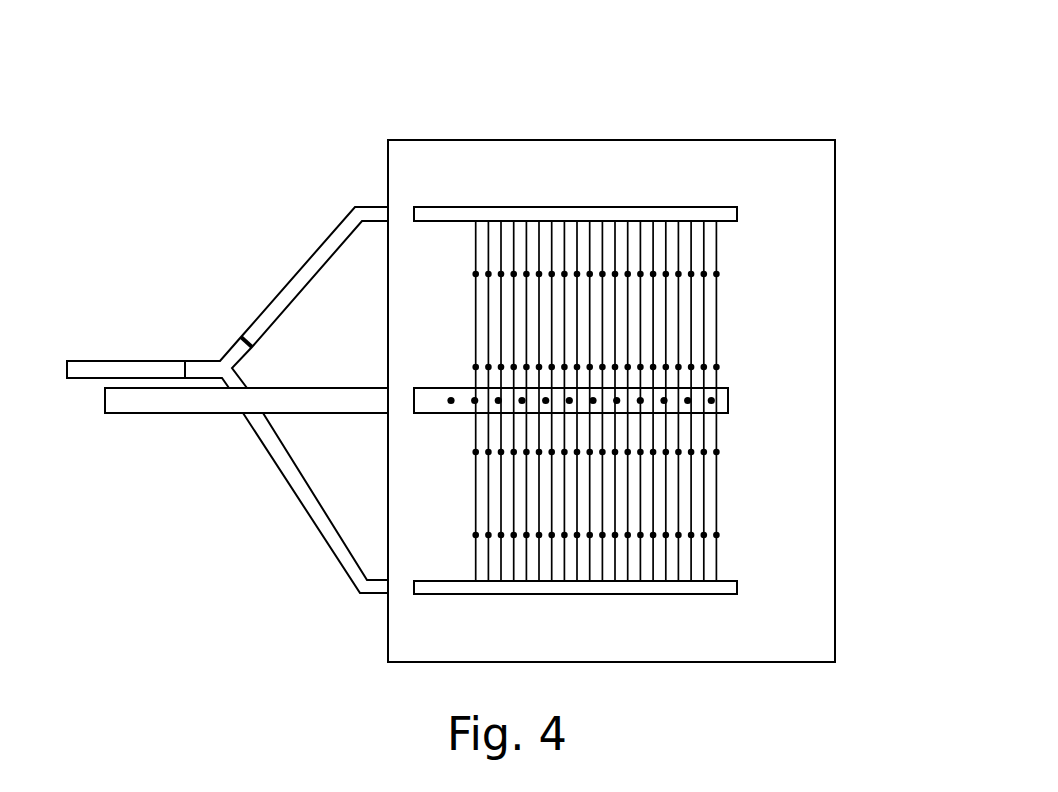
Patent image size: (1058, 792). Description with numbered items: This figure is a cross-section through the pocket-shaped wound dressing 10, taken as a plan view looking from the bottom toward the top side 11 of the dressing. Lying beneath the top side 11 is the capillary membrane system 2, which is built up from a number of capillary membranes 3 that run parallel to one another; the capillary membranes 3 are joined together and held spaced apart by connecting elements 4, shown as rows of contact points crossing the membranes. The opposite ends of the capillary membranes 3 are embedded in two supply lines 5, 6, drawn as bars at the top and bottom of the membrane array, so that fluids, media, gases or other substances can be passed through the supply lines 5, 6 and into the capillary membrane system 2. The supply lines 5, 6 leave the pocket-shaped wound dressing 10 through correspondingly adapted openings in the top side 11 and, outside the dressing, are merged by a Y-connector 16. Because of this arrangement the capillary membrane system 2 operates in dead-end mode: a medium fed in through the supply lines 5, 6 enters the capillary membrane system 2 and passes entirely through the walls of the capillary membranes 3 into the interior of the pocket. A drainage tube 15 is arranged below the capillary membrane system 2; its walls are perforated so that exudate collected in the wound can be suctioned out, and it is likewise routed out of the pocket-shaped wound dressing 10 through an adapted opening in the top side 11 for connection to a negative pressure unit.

The pocket-shaped wound dressing 10 is at (683, 132).
The top side 11 is at (530, 155).
The supply line 6 is at (738, 213).
The supply line 5 is at (738, 587).
The Y-connector 16 is at (233, 358).
The drainage tube 15 is at (180, 398).
The capillary membrane system 2 is at (695, 313).
The capillary membranes 3 is at (666, 477).
The connecting elements 4 is at (717, 274).